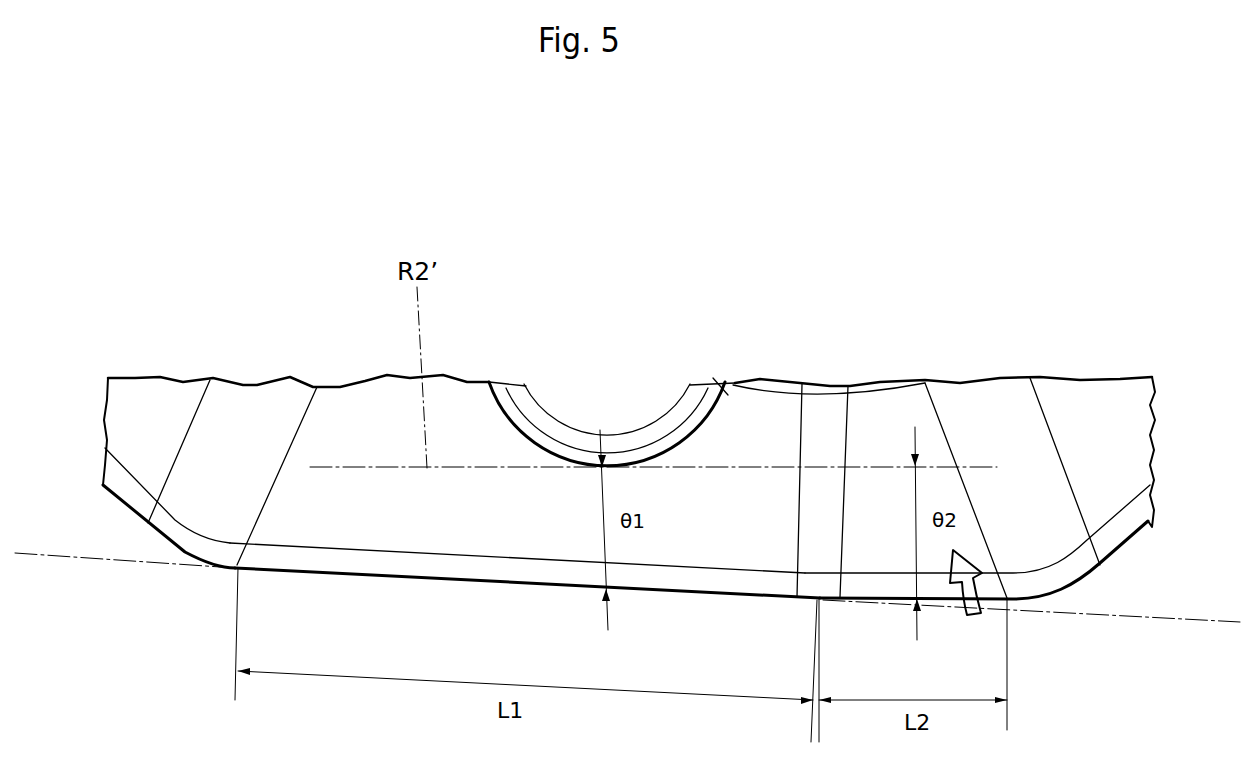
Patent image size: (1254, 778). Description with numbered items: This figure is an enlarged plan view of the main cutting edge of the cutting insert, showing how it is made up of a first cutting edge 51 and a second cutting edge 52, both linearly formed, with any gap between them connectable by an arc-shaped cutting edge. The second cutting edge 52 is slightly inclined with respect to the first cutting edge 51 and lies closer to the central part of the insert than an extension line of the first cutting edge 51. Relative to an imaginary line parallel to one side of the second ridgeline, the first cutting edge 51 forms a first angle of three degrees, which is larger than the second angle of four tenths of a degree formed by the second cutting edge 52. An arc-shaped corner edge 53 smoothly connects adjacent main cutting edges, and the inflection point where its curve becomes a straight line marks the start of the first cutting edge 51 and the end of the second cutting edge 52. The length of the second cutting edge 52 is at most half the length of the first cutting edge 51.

The first cutting edge 51 is at (521, 583).
The second cutting edge 52 is at (892, 595).
The corner edge 53 is at (173, 545).